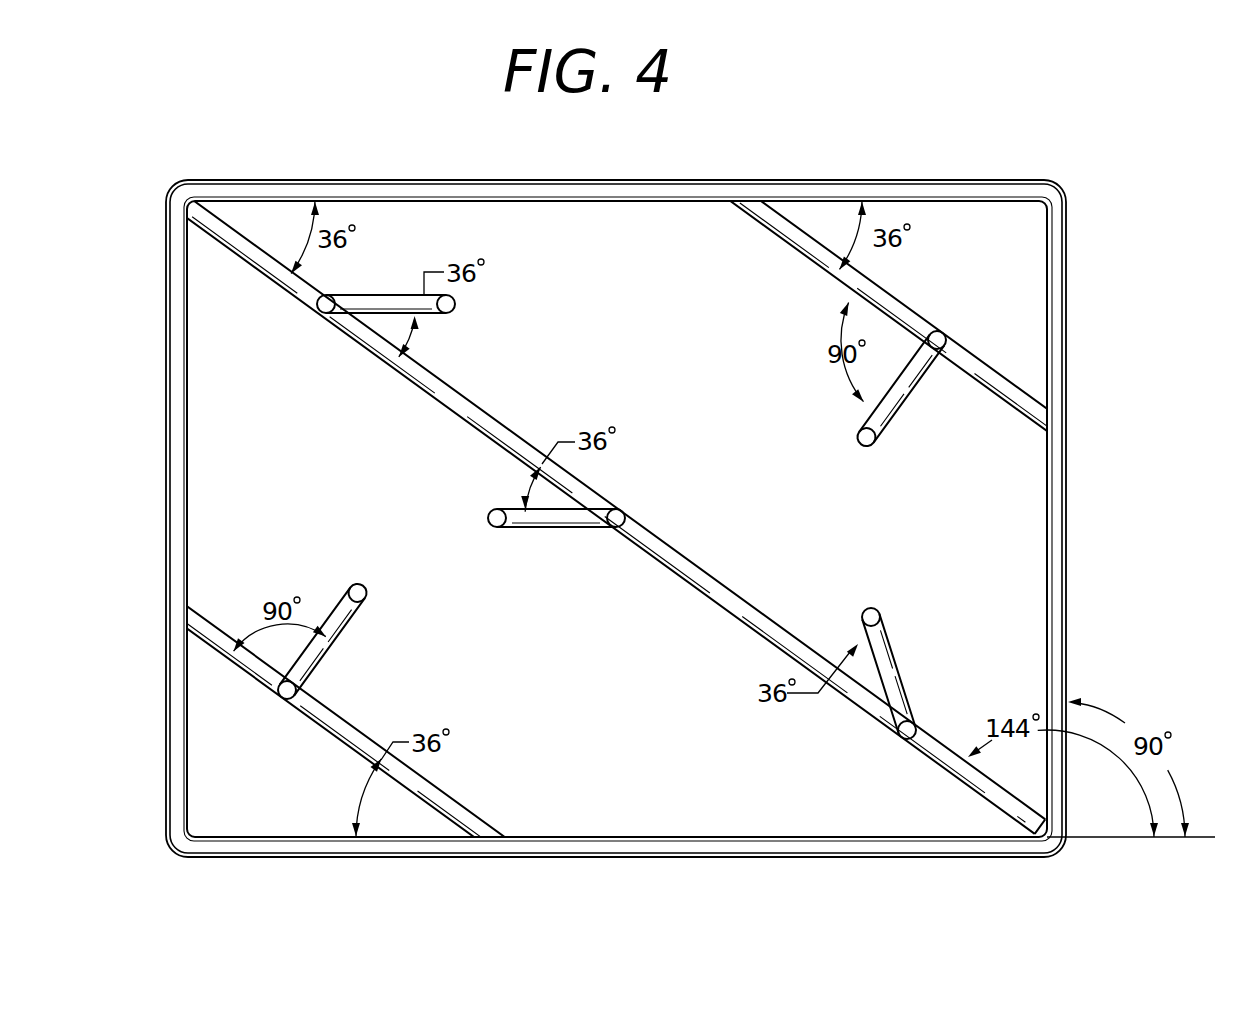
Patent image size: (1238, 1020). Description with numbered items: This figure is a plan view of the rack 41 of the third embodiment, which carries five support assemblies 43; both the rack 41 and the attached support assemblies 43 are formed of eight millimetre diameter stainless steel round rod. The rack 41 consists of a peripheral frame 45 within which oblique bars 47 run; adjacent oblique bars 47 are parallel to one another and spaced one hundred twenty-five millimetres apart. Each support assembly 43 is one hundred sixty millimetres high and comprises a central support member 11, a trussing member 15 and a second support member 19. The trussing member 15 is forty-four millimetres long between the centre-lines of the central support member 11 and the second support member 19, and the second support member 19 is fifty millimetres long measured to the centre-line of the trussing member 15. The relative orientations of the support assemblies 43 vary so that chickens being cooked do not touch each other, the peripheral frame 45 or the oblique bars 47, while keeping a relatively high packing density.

The central support member 11 is at (910, 738).
The trussing member 15 is at (898, 668).
The second support member 19 is at (879, 610).
The rack 41 is at (702, 518).
The support assembly 43 is at (1005, 330).
The peripheral frame 45 is at (1070, 497).
The oblique bar 47 is at (1013, 383).